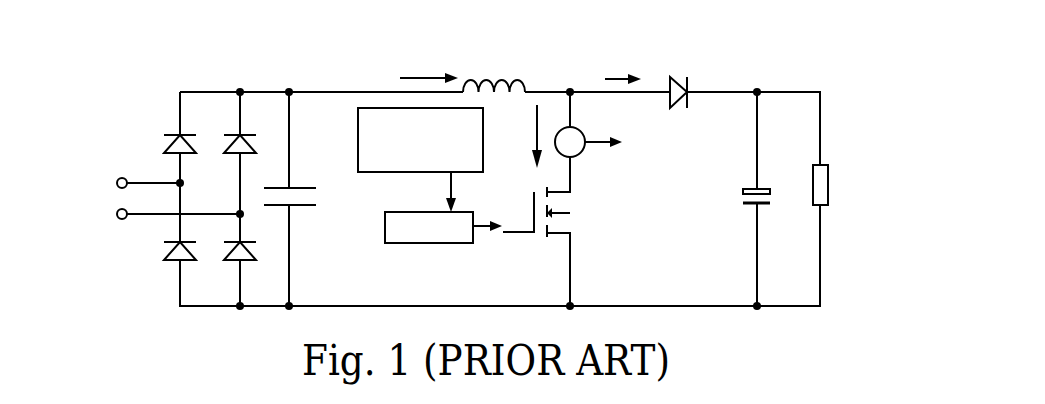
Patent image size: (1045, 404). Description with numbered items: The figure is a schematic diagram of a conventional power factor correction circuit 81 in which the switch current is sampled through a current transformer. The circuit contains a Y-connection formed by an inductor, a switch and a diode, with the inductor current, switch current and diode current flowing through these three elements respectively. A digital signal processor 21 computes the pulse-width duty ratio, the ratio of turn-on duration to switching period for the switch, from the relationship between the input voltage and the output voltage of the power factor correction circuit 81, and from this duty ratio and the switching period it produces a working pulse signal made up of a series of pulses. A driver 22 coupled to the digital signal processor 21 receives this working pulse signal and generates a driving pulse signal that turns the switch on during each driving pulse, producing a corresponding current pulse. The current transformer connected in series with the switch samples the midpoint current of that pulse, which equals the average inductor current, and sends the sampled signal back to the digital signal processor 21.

The power factor correction circuit 81 is at (320, 39).
The digital signal processor 21 is at (358, 175).
The driver 22 is at (410, 243).